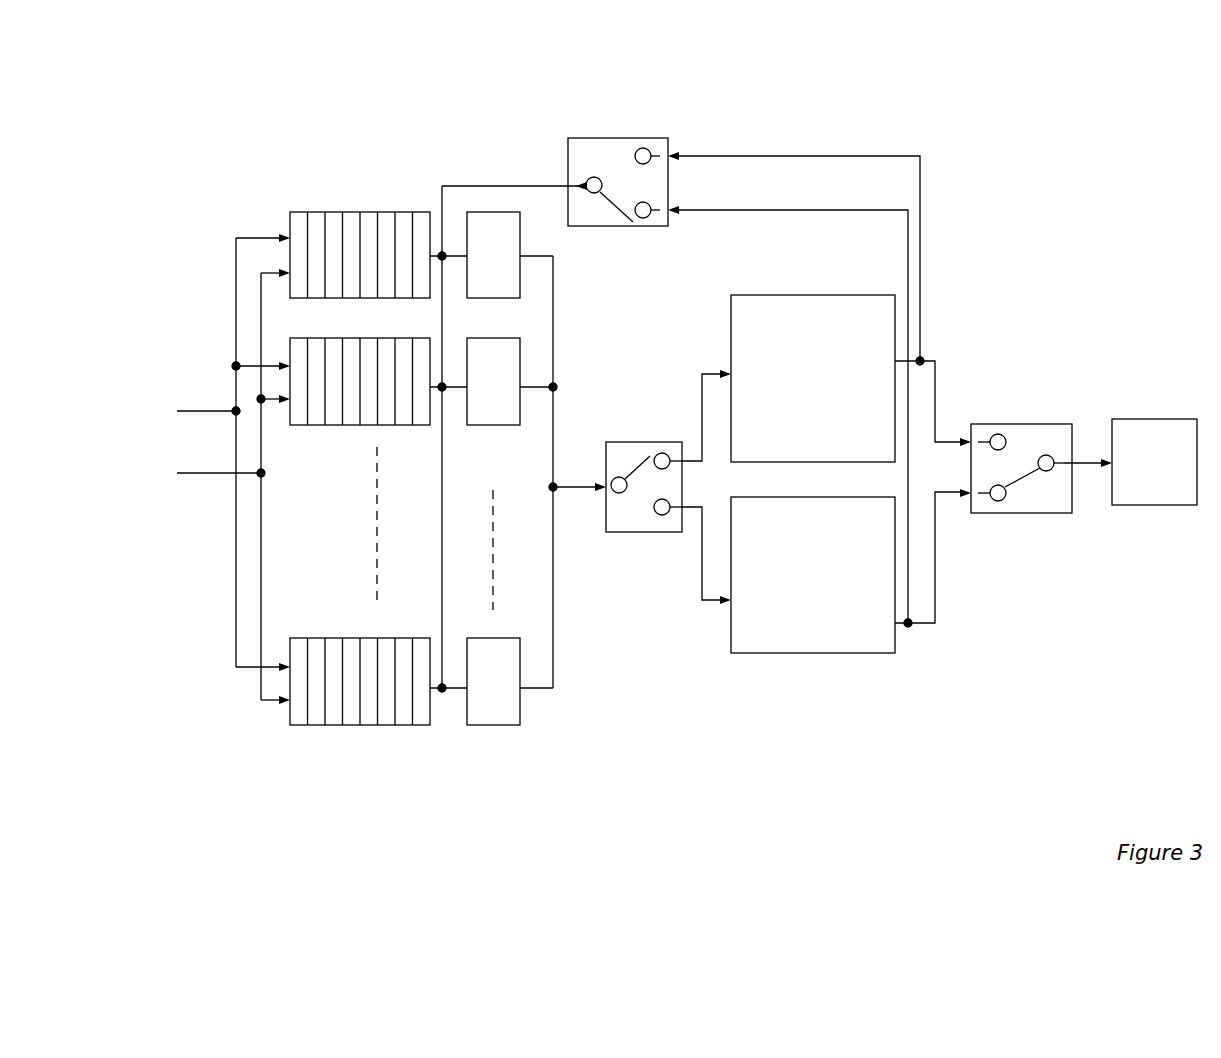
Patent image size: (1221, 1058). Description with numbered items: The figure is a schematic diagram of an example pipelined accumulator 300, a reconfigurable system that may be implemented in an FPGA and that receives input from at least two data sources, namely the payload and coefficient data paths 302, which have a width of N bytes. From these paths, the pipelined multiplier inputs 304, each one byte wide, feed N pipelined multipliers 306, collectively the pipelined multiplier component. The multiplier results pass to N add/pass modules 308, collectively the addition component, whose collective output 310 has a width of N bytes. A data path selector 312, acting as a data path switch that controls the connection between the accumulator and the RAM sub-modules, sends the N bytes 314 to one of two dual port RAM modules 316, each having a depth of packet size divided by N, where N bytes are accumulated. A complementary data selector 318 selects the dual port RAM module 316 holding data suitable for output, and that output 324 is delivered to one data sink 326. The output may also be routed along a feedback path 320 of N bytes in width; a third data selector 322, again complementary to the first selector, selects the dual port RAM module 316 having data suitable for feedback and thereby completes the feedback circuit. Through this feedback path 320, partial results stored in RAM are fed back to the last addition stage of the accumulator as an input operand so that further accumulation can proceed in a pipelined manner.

The pipelined accumulator 300 is at (389, 850).
The payload and coefficient data paths 302 is at (204, 450).
The pipelined multiplier inputs 304 is at (238, 258).
The pipelined multipliers 306 is at (357, 180).
The add/pass modules 308 is at (495, 196).
The collective output of the add/pass modules 310 is at (602, 459).
The data path selector 312 is at (651, 416).
The N bytes 314 is at (701, 346).
The dual port RAM modules 316 is at (813, 474).
The complementary data selector 318 is at (995, 530).
The feedback path 320 is at (921, 261).
The third data selector 322 is at (581, 244).
The output 324 is at (1090, 428).
The data sink 326 is at (1127, 522).